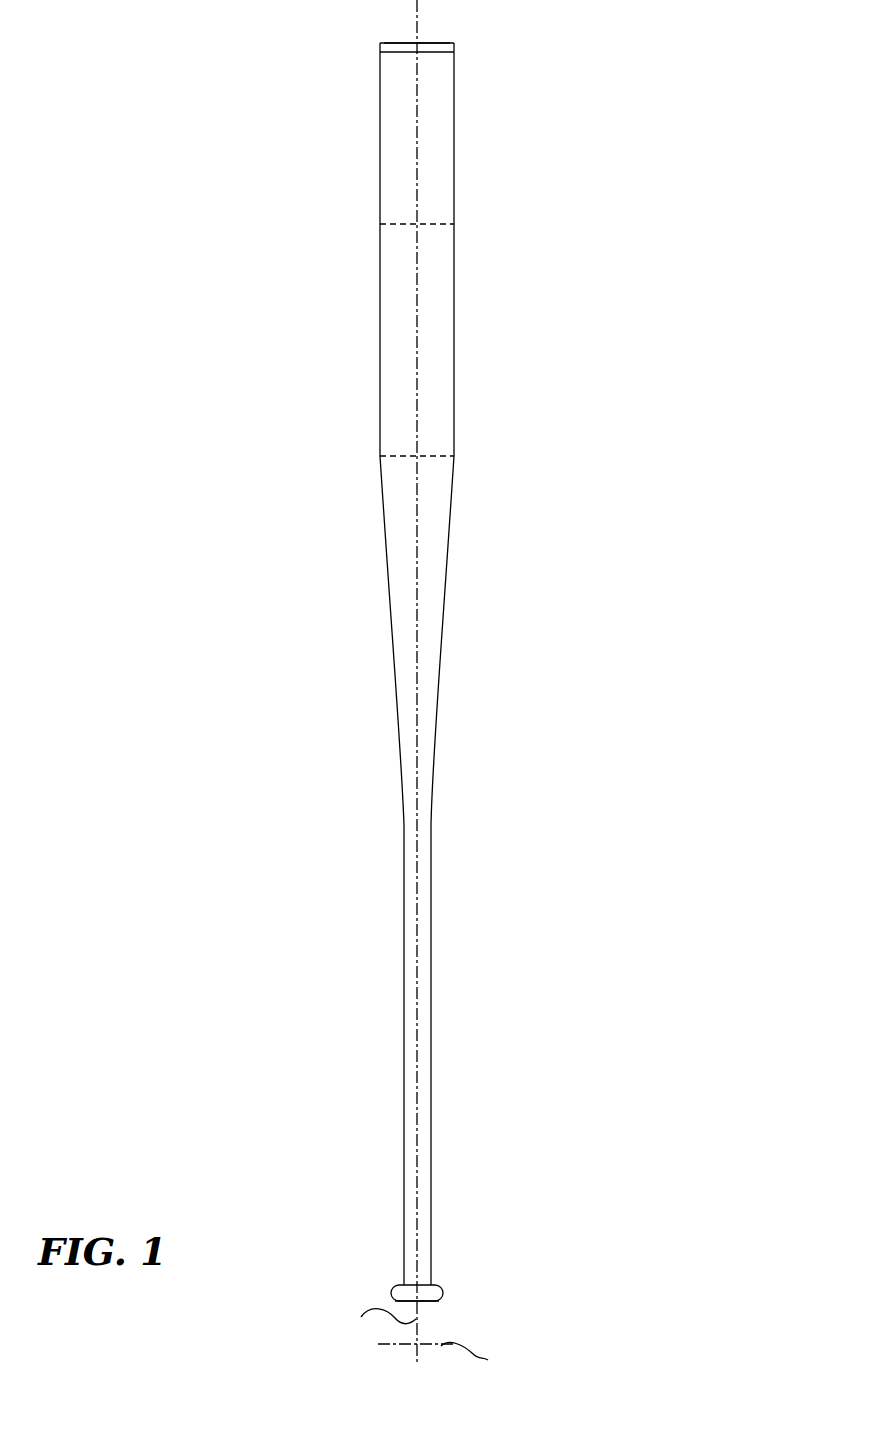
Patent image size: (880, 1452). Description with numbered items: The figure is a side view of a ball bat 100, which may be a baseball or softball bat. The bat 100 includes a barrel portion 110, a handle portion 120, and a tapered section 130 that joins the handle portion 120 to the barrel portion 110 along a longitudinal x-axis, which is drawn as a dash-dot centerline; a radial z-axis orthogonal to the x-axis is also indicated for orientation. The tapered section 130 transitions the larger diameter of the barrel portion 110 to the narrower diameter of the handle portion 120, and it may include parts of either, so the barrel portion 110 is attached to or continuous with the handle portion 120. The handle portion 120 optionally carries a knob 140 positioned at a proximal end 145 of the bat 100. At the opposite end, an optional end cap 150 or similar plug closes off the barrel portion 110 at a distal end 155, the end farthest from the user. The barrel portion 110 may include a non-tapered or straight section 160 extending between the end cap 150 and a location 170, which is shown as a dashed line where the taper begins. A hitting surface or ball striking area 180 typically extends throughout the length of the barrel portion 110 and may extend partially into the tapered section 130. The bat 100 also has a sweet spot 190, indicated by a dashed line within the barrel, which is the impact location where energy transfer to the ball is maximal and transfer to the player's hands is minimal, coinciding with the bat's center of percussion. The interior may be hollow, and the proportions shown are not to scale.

The ball bat 100 is at (552, 125).
The barrel portion 110 is at (365, 53).
The handle portion 120 is at (366, 826).
The tapered section 130 is at (349, 458).
The knob 140 is at (441, 1286).
The proximal end 145 is at (441, 1313).
The end cap 150 is at (455, 43).
The distal end 155 is at (391, 33).
The straight section 160 is at (445, 251).
The location 170 is at (455, 456).
The ball striking area 180 is at (277, 53).
The sweet spot 190 is at (398, 224).